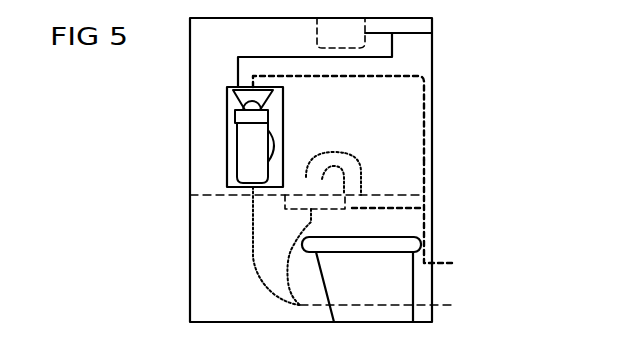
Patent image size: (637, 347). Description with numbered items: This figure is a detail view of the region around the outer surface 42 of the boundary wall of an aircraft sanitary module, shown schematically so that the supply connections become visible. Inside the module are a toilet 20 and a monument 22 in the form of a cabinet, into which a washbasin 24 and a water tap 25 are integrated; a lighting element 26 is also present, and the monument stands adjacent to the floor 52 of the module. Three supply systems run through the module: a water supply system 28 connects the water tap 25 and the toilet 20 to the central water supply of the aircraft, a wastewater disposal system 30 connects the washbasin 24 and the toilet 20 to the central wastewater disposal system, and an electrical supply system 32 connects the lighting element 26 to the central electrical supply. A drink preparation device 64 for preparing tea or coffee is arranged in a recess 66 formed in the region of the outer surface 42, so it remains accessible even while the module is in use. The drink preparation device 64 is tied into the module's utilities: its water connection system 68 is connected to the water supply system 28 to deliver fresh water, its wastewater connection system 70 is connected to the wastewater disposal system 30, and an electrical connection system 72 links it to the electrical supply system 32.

The toilet 20 is at (405, 288).
The monument 22 is at (210, 221).
The washbasin 24 is at (304, 193).
The water tap 25 is at (337, 152).
The lighting element 26 is at (317, 33).
The water supply system 28 is at (389, 203).
The wastewater disposal system 30 is at (380, 300).
The electrical supply system 32 is at (418, 36).
The outer surface 42 is at (190, 64).
The floor 52 is at (270, 320).
The drink preparation device 64 is at (247, 137).
The recess 66 is at (230, 165).
The water connection system 68 is at (398, 78).
The wastewater connection system 70 is at (252, 258).
The electrical connection system 72 is at (263, 54).